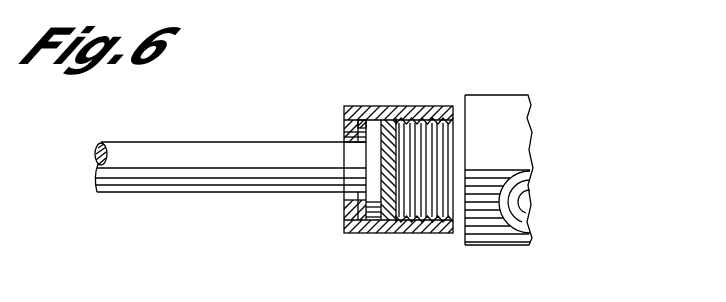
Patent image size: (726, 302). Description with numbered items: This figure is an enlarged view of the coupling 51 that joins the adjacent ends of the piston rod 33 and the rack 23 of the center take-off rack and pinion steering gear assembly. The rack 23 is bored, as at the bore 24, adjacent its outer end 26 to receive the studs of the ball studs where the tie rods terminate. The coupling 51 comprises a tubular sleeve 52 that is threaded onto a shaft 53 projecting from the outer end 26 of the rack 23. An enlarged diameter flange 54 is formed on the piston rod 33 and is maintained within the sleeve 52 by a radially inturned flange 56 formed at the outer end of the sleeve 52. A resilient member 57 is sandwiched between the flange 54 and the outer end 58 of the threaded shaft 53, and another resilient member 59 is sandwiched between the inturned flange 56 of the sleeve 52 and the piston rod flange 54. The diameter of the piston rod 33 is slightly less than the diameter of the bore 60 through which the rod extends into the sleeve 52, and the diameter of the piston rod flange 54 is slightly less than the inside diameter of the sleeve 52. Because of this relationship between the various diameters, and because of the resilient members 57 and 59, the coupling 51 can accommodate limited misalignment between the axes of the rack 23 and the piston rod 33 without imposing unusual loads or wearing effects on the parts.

The rack 23 is at (513, 118).
The bore 24 is at (522, 197).
The outer end of the rack 26 is at (462, 116).
The piston rod 33 is at (243, 148).
The coupling 51 is at (356, 103).
The tubular sleeve 52 is at (366, 233).
The threaded shaft 53 is at (428, 192).
The piston rod flange 54 is at (372, 195).
The radially inturned flange 56 is at (360, 136).
The resilient member 57 is at (381, 166).
The outer end of the threaded shaft 58 is at (388, 119).
The resilient member 59 is at (366, 143).
The bore 60 is at (359, 126).